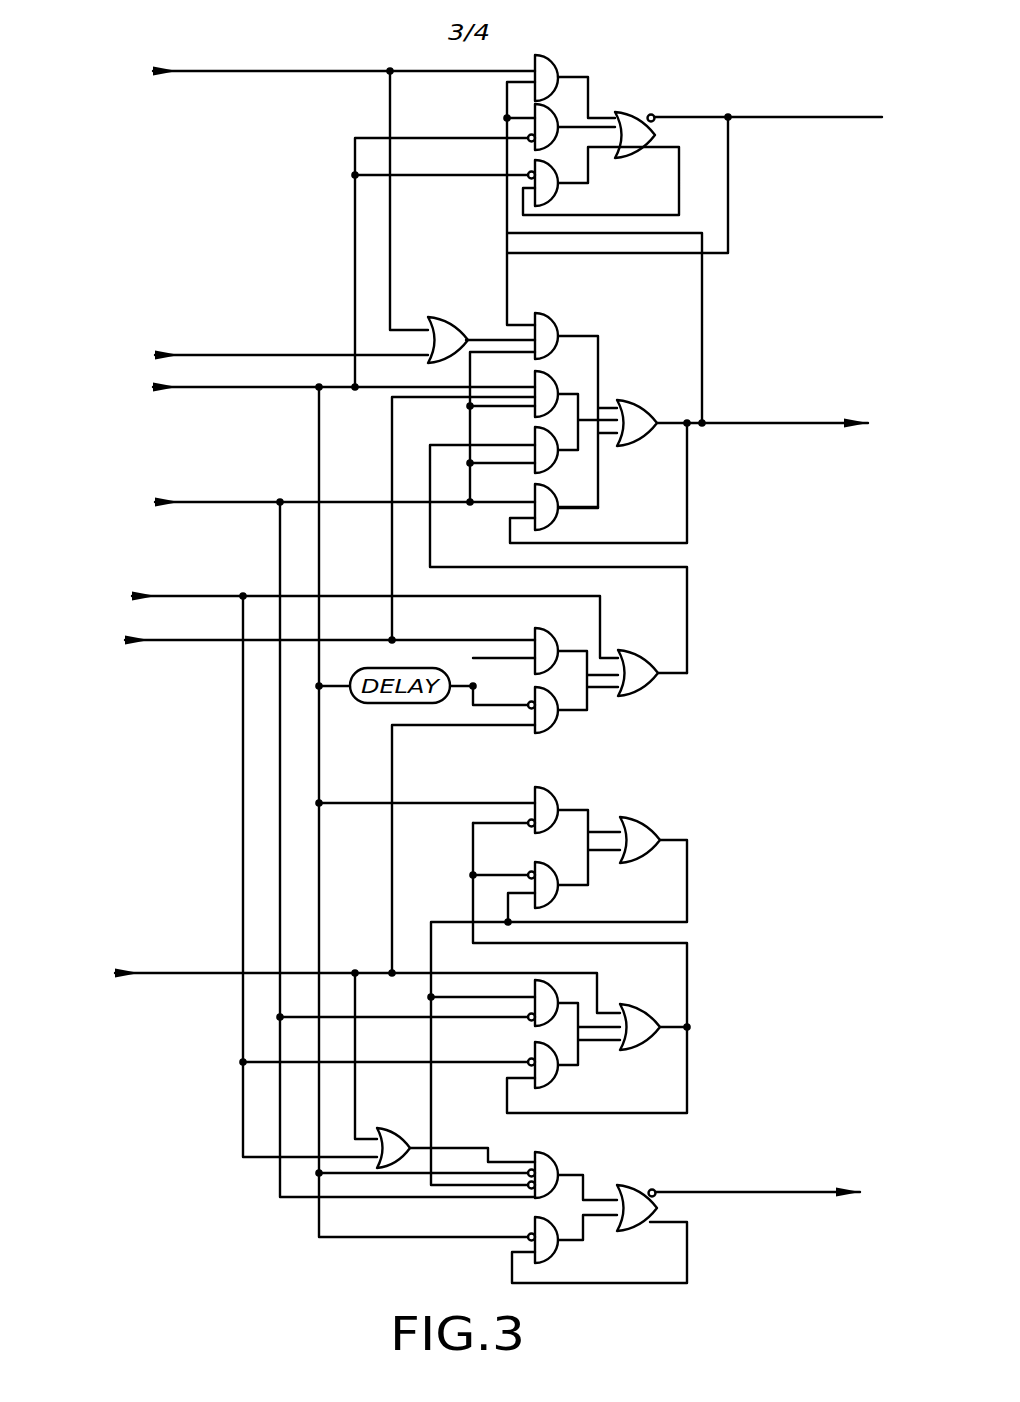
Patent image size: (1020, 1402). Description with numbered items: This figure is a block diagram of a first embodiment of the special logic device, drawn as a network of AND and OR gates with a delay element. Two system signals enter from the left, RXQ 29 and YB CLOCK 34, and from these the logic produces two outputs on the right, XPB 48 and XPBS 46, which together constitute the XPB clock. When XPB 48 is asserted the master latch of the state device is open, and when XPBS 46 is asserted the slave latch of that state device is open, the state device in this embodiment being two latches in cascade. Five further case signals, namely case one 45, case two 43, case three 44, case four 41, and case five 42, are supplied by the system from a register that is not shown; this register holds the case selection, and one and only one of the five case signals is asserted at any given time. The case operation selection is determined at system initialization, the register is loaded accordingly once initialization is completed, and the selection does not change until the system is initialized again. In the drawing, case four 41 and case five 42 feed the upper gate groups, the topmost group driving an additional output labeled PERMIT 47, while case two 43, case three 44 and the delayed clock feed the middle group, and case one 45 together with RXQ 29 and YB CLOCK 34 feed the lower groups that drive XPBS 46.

The CASE 4 41 is at (299, 50).
The CASE 5 42 is at (310, 330).
The YB CLOCK 34 is at (207, 404).
The RXQ 29 is at (203, 519).
The CASE 2 43 is at (136, 567).
The CASE 3 44 is at (127, 626).
The CASE 1 45 is at (127, 1005).
The PERMIT 47 is at (745, 113).
The XPB 48 is at (866, 400).
The XPBS 46 is at (862, 1170).